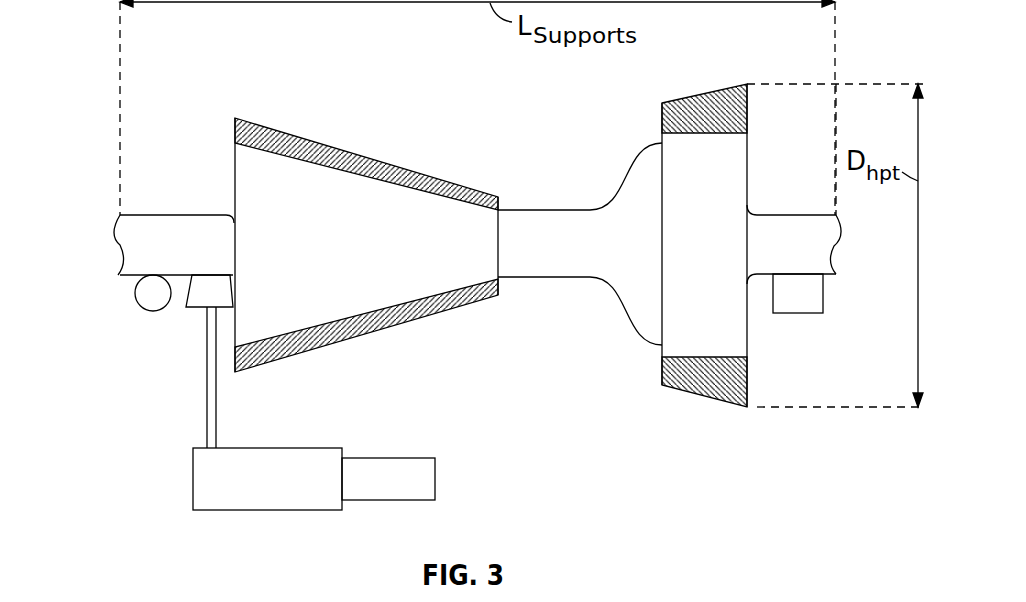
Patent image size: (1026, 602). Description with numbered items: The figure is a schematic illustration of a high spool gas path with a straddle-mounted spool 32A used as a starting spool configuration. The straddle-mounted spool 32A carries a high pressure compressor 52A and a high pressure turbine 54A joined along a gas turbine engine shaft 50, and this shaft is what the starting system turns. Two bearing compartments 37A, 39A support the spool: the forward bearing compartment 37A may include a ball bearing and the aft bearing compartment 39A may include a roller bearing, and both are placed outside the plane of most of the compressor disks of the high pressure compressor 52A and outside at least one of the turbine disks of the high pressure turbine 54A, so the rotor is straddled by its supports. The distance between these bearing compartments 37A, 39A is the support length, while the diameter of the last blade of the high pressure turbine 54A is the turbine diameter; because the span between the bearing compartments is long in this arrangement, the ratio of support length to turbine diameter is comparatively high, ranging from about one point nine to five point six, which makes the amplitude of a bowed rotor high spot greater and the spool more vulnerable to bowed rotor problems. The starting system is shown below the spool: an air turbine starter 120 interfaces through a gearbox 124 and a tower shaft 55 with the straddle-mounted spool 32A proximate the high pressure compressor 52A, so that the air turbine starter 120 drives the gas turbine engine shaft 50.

The gas turbine engine shaft 50 is at (212, 198).
The bearing compartment 37A is at (136, 295).
The high pressure compressor 52A is at (446, 278).
The straddle-mounted spool 32A is at (569, 177).
The high pressure turbine 54A is at (662, 312).
The bearing compartment 39A is at (800, 313).
The tower shaft 55 is at (216, 435).
The gearbox 124 is at (193, 478).
The air turbine starter 120 is at (435, 478).